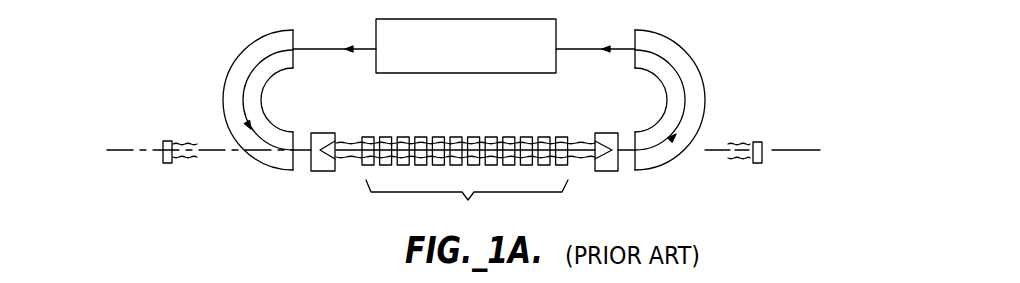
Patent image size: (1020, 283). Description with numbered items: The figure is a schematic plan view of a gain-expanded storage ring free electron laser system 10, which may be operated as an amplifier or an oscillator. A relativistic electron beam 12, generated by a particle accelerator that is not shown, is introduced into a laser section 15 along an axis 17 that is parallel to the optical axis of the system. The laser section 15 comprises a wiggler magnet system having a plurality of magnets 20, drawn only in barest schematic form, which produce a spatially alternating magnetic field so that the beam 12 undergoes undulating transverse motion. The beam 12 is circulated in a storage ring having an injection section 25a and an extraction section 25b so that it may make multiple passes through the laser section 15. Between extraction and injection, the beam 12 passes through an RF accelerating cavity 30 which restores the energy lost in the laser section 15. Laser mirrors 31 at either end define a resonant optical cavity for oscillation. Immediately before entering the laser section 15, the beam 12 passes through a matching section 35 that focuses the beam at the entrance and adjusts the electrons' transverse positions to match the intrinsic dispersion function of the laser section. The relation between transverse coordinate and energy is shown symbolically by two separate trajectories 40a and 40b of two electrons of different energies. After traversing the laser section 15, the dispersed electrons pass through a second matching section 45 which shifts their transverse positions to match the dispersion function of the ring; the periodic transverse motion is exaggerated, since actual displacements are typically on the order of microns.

The storage ring free electron laser system 10 is at (612, 198).
The relativistic electron beam 12 is at (318, 49).
The laser section 15 is at (468, 200).
The axis 17 is at (786, 150).
The magnets 20 is at (456, 137).
The injection section 25a is at (243, 50).
The extraction section 25b is at (692, 62).
The RF accelerating cavity 30 is at (541, 20).
The laser mirrors 31 is at (167, 164).
The matching section 35 is at (322, 133).
The trajectory 40a is at (350, 144).
The trajectory 40b is at (349, 158).
The second matching section 45 is at (601, 133).